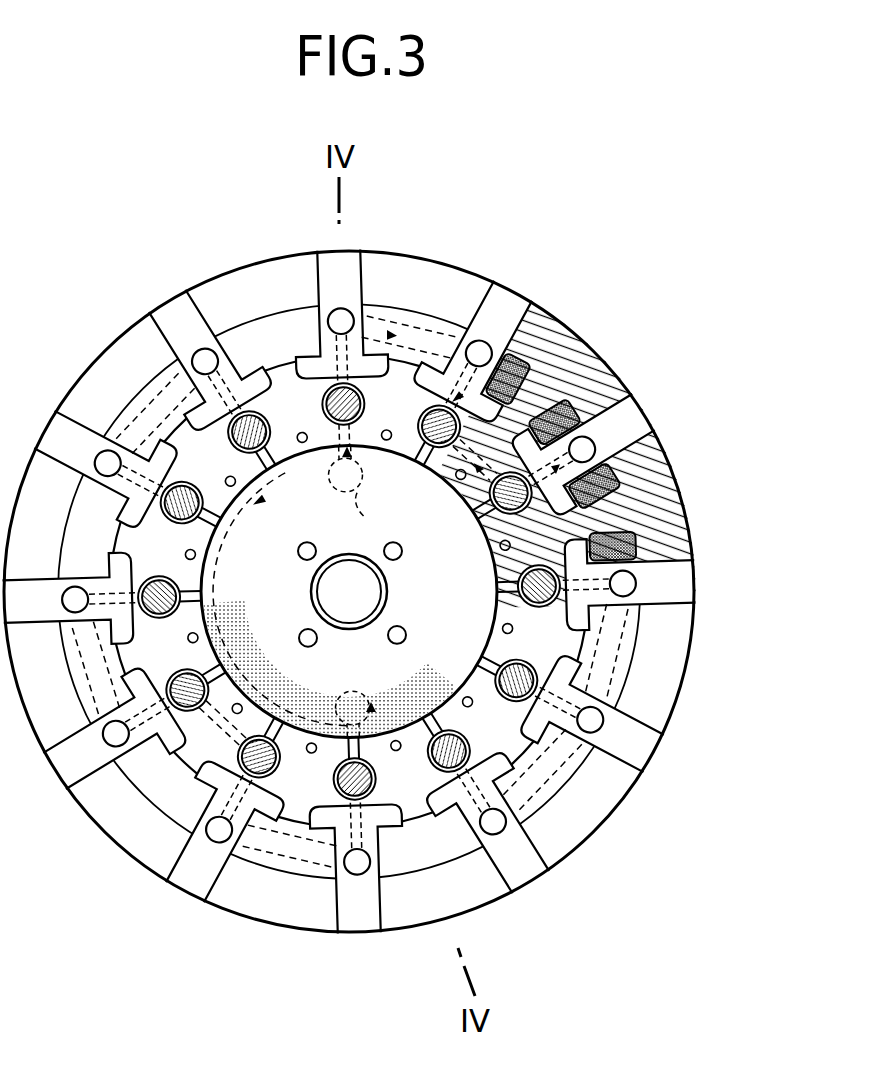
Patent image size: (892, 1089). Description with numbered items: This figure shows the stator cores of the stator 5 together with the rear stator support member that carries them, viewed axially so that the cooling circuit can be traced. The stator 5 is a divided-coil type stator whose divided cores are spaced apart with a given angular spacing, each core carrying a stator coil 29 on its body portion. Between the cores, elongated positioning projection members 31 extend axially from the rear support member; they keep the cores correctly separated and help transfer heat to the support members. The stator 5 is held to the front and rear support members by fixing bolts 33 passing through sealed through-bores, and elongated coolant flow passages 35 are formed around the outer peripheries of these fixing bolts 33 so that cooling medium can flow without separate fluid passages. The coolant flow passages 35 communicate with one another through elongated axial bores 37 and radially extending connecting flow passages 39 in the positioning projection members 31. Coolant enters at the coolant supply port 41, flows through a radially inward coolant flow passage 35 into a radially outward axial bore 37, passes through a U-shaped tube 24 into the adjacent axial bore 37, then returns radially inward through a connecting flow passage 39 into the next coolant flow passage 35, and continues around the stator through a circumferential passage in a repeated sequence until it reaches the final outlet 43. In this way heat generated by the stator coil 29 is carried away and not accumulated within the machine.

The stator 5 is at (592, 372).
The U-shaped tube 24 is at (405, 332).
The stator coil 29 is at (528, 360).
The positioning projection member 31 is at (354, 248).
The fixing bolt 33 is at (442, 400).
The coolant flow passage 35 is at (424, 452).
The elongated axial bore 37 is at (334, 308).
The connecting flow passage 39 is at (324, 348).
The coolant supply port 41 is at (362, 615).
The final outlet 43 is at (328, 607).